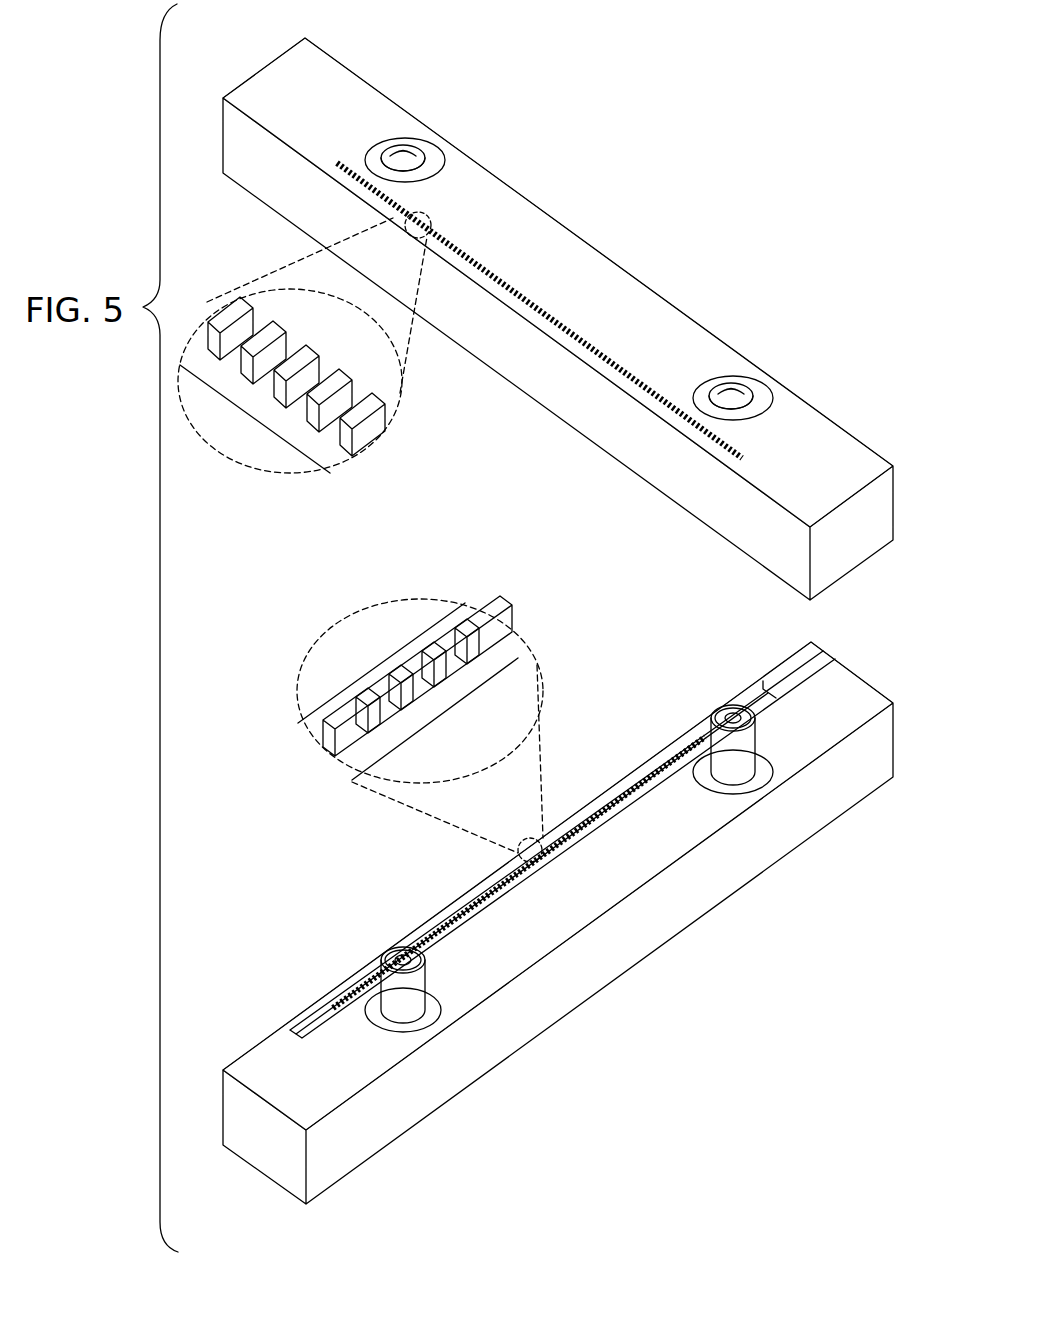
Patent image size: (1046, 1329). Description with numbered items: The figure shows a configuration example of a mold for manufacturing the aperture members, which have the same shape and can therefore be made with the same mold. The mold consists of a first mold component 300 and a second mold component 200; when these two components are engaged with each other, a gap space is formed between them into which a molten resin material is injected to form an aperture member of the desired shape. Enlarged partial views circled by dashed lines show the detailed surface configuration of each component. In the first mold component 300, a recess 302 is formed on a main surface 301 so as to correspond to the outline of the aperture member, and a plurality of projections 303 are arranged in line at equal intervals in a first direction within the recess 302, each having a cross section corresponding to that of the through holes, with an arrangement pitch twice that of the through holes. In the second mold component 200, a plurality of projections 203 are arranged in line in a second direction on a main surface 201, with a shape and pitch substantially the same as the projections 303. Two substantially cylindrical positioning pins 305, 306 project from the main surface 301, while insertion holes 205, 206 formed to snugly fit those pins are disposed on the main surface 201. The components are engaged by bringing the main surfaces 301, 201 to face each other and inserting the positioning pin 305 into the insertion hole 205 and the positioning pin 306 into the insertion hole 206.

The second mold component 200 is at (640, 297).
The main surface 201 is at (500, 230).
The projections 203 is at (368, 420).
The insertion hole 205 is at (417, 162).
The insertion hole 206 is at (747, 403).
The first mold component 300 is at (593, 975).
The main surface 301 is at (475, 712).
The recess 302 is at (320, 757).
The projections 303 is at (480, 637).
The positioning pin 305 is at (410, 1007).
The positioning pin 306 is at (742, 768).